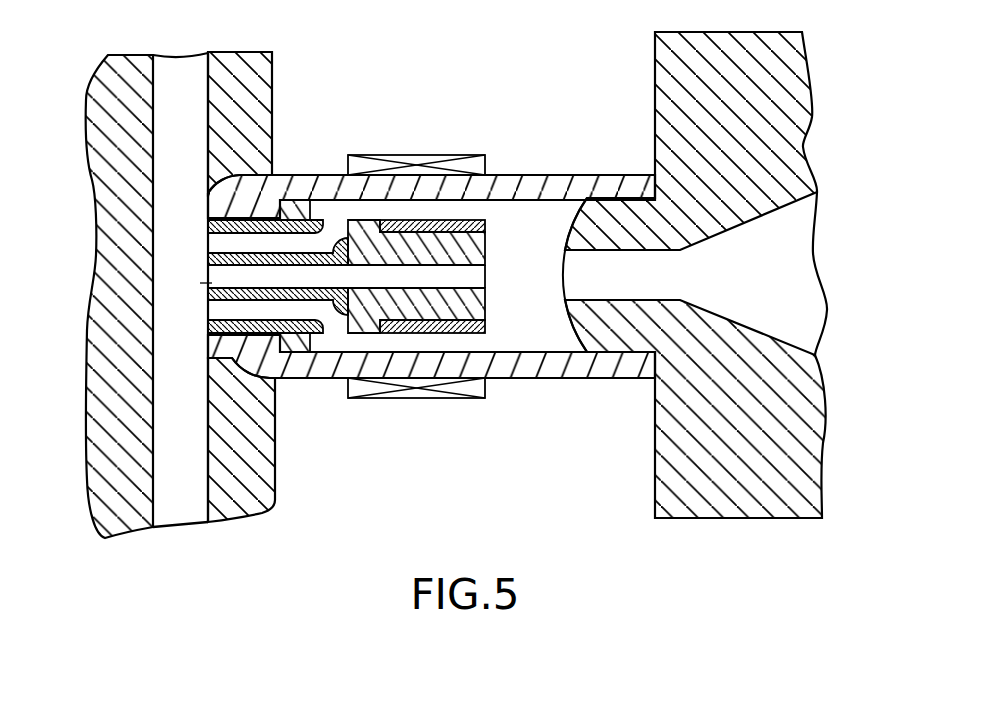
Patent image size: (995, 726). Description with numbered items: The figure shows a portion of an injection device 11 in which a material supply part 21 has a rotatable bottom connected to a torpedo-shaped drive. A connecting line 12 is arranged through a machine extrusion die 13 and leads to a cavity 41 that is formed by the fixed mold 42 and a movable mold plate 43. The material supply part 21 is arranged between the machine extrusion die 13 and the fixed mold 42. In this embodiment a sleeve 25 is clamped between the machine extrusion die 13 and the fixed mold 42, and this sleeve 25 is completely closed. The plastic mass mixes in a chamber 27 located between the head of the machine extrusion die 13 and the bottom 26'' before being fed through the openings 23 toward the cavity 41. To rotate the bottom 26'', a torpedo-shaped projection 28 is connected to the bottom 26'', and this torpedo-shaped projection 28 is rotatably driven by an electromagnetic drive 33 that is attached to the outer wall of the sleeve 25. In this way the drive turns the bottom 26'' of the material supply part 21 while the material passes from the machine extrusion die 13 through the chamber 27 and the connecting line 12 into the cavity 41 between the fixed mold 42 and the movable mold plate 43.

The injection device 11 is at (858, 298).
The connecting line 12 is at (808, 230).
The machine extrusion die 13 is at (587, 352).
The material supply part 21 is at (507, 378).
The openings 23 is at (209, 283).
The sleeve 25 is at (535, 174).
The bottom 26'' is at (309, 244).
The chamber 27 is at (514, 340).
The torpedo-shaped projection 28 is at (485, 322).
The electromagnetic drive 33 is at (368, 158).
The cavity 41 is at (186, 62).
The fixed mold 42 is at (262, 60).
The movable mold plate 43 is at (103, 65).